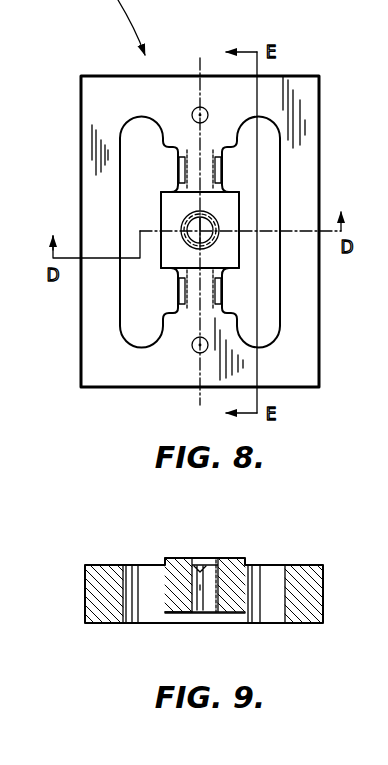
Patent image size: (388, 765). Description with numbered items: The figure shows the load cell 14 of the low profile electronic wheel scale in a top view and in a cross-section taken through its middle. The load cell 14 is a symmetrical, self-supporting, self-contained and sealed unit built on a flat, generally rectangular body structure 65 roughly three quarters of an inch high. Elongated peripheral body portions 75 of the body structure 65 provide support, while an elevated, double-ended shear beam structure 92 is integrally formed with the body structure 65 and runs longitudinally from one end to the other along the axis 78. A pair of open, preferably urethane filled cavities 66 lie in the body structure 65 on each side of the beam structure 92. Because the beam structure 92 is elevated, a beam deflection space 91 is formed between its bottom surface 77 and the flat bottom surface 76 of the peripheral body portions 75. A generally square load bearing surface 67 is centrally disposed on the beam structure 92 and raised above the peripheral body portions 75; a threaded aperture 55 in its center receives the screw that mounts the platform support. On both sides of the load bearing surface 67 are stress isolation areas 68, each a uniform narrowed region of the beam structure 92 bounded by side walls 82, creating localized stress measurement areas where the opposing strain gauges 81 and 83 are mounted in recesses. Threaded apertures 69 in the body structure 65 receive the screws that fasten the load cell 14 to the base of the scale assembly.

In FIG. 9, the load cell 14 is at (119, 558).
In FIG. 8, the threaded aperture 55 is at (207, 235).
In FIG. 9, the threaded aperture 55 is at (202, 580).
In FIG. 8, the body structure 65 is at (113, 98).
In FIG. 8, the cavities 66 is at (146, 263).
In FIG. 9, the cavities 66 is at (153, 590).
In FIG. 8, the load bearing surface 67 is at (226, 208).
In FIG. 9, the load bearing surface 67 is at (237, 575).
In FIG. 8, the stress isolation areas 68 is at (227, 168).
In FIG. 8, the threaded apertures 69 is at (195, 104).
In FIG. 8, the peripheral body portions 75 is at (110, 224).
In FIG. 9, the peripheral body portions 75 is at (108, 602).
In FIG. 9, the flat bottom surface 76 is at (263, 623).
In FIG. 9, the bottom surface 77 is at (178, 616).
In FIG. 8, the axis 78 is at (202, 60).
In FIG. 8, the strain gauge 81 is at (207, 168).
In FIG. 8, the side walls 82 is at (203, 148).
In FIG. 8, the strain gauge 83 is at (172, 172).
In FIG. 9, the beam deflection space 91 is at (222, 616).
In FIG. 8, the shear beam structure 92 is at (153, 200).